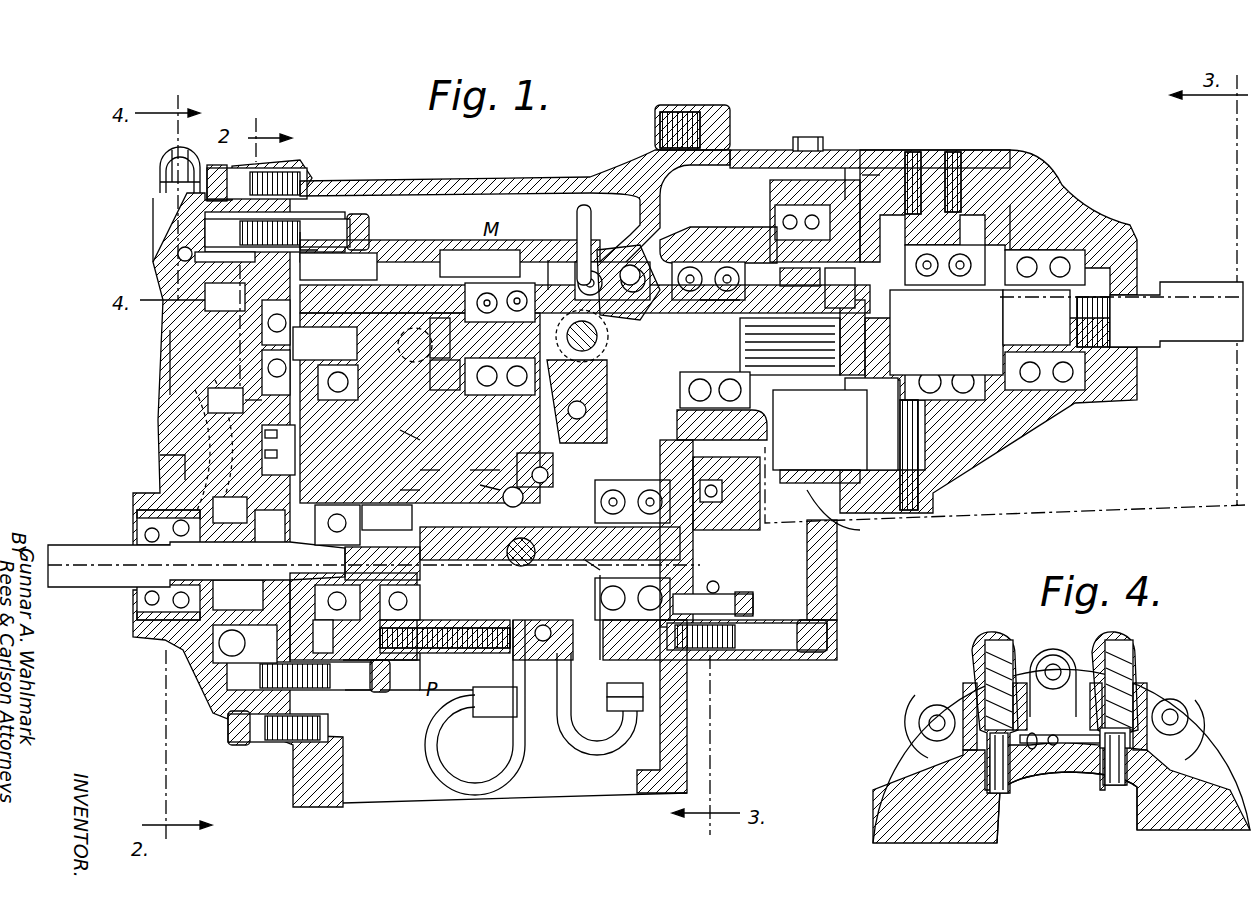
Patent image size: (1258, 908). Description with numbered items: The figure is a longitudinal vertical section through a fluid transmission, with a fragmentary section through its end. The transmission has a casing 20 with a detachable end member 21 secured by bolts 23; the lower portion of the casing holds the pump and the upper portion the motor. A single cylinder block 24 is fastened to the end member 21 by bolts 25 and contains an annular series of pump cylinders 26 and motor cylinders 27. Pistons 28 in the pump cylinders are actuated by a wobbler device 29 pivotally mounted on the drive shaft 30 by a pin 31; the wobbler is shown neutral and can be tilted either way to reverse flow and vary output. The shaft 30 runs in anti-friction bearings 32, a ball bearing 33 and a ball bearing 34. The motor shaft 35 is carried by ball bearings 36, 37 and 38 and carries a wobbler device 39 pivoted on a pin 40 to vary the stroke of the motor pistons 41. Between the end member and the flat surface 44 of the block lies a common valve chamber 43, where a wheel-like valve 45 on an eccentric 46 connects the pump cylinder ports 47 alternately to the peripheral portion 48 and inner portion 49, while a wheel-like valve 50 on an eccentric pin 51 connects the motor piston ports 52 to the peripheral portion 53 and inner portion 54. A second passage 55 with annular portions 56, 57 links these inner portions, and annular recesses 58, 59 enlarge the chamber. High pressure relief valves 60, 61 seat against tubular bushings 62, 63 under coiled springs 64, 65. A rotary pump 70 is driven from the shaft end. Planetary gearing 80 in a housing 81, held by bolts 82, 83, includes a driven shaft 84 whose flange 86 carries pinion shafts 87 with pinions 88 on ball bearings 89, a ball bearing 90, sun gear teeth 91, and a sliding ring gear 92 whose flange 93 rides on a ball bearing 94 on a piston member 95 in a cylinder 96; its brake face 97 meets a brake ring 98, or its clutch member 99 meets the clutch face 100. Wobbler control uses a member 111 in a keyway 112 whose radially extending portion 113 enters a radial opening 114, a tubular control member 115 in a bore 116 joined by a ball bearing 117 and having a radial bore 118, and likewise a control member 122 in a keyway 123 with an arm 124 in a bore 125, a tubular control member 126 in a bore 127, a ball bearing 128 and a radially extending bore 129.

In FIG. 1, the casing 20 is at (470, 173).
In FIG. 1, the end member 21 is at (168, 372).
In FIG. 4, the end member 21 is at (900, 808).
In FIG. 1, the bolts 23 is at (275, 180).
In FIG. 4, the bolts 23 is at (1182, 728).
In FIG. 1, the cylinder block 24 is at (520, 470).
In FIG. 1, the bolts 25 is at (330, 232).
In FIG. 1, the pump cylinders 26 is at (400, 692).
In FIG. 1, the motor cylinders 27 is at (454, 244).
In FIG. 1, the pistons 28 is at (358, 692).
In FIG. 1, the wobbler device 29 is at (547, 670).
In FIG. 1, the drive shaft 30 is at (82, 575).
In FIG. 1, the pin 31 is at (512, 553).
In FIG. 1, the anti-friction bearings 32 is at (652, 480).
In FIG. 1, the ball bearing 33 is at (353, 582).
In FIG. 1, the ball bearing 34 is at (180, 500).
In FIG. 1, the shaft 35 is at (447, 338).
In FIG. 1, the ball bearings 36 is at (700, 262).
In FIG. 1, the ball bearing 37 is at (310, 350).
In FIG. 1, the ball bearing 38 is at (558, 336).
In FIG. 1, the wobbler device 39 is at (625, 262).
In FIG. 1, the pin 40 is at (581, 401).
In FIG. 1, the motor pistons 41 is at (450, 237).
In FIG. 1, the valve chamber 43 is at (215, 430).
In FIG. 1, the flat surface 44 is at (215, 400).
In FIG. 1, the wheel-like valve 45 is at (220, 660).
In FIG. 1, the eccentric 46 is at (262, 580).
In FIG. 1, the pump cylinder ports 47 is at (326, 636).
In FIG. 1, the peripheral portion 48 is at (262, 742).
In FIG. 1, the inner portion 49 is at (250, 585).
In FIG. 1, the wheel-like valve 50 is at (205, 258).
In FIG. 1, the eccentric pin 51 is at (325, 343).
In FIG. 1, the motor piston ports 52 is at (338, 266).
In FIG. 1, the peripheral portion 53 is at (300, 238).
In FIG. 1, the inner portion 54 is at (215, 290).
In FIG. 1, the second passage 55 is at (162, 468).
In FIG. 1, the annular portion 56 is at (232, 525).
In FIG. 1, the annular portion 57 is at (178, 360).
In FIG. 4, the annular portion 57 is at (1110, 818).
In FIG. 1, the annular recess 58 is at (265, 692).
In FIG. 1, the annular recess 59 is at (190, 228).
In FIG. 4, the high pressure relief valve 60 is at (1028, 738).
In FIG. 4, the high pressure relief valve 61 is at (1135, 740).
In FIG. 1, the tubular bushing 62 is at (178, 252).
In FIG. 4, the tubular bushing 62 is at (1002, 775).
In FIG. 4, the tubular bushing 63 is at (1105, 788).
In FIG. 4, the coiled spring 64 is at (985, 672).
In FIG. 1, the coiled spring 65 is at (1045, 245).
In FIG. 4, the coiled spring 65 is at (1125, 672).
In FIG. 1, the rotary pump 70 is at (742, 578).
In FIG. 1, the planetary gearing 80 is at (808, 172).
In FIG. 1, the housing 81 is at (752, 150).
In FIG. 1, the bolt 82 is at (715, 118).
In FIG. 1, the bolt 83 is at (836, 640).
In FIG. 1, the driven shaft 84 is at (1150, 305).
In FIG. 1, the flange 86 is at (915, 368).
In FIG. 1, the pinion shafts 87 is at (800, 257).
In FIG. 1, the pinions 88 is at (775, 212).
In FIG. 1, the ball bearings 89 is at (736, 262).
In FIG. 1, the ball bearing 90 is at (810, 380).
In FIG. 1, the sun gear teeth 91 is at (790, 372).
In FIG. 1, the ring gear 92 is at (775, 185).
In FIG. 1, the flange 93 is at (912, 185).
In FIG. 1, the ball bearing 94 is at (970, 232).
In FIG. 1, the piston member 95 is at (990, 205).
In FIG. 1, the cylinder 96 is at (952, 195).
In FIG. 1, the brake face 97 is at (888, 200).
In FIG. 1, the brake ring 98 is at (868, 172).
In FIG. 1, the clutch member 99 is at (848, 168).
In FIG. 1, the clutch face 100 is at (838, 270).
In FIG. 1, the member 111 is at (610, 557).
In FIG. 1, the keyway 112 is at (385, 532).
In FIG. 1, the radially extending portion 113 is at (473, 457).
In FIG. 1, the radial opening 114 is at (474, 476).
In FIG. 1, the tubular control member 115 is at (429, 457).
In FIG. 1, the bore 116 is at (399, 477).
In FIG. 1, the ball bearing 117 is at (404, 587).
In FIG. 1, the radial bore 118 is at (445, 636).
In FIG. 1, the control member 122 is at (690, 318).
In FIG. 1, the keyway 123 is at (716, 318).
In FIG. 1, the arm 124 is at (578, 222).
In FIG. 1, the bore 125 is at (549, 290).
In FIG. 1, the tubular control member 126 is at (407, 375).
In FIG. 1, the bore 127 is at (395, 422).
In FIG. 1, the ball bearing 128 is at (500, 339).
In FIG. 1, the radially extending bore 129 is at (397, 345).